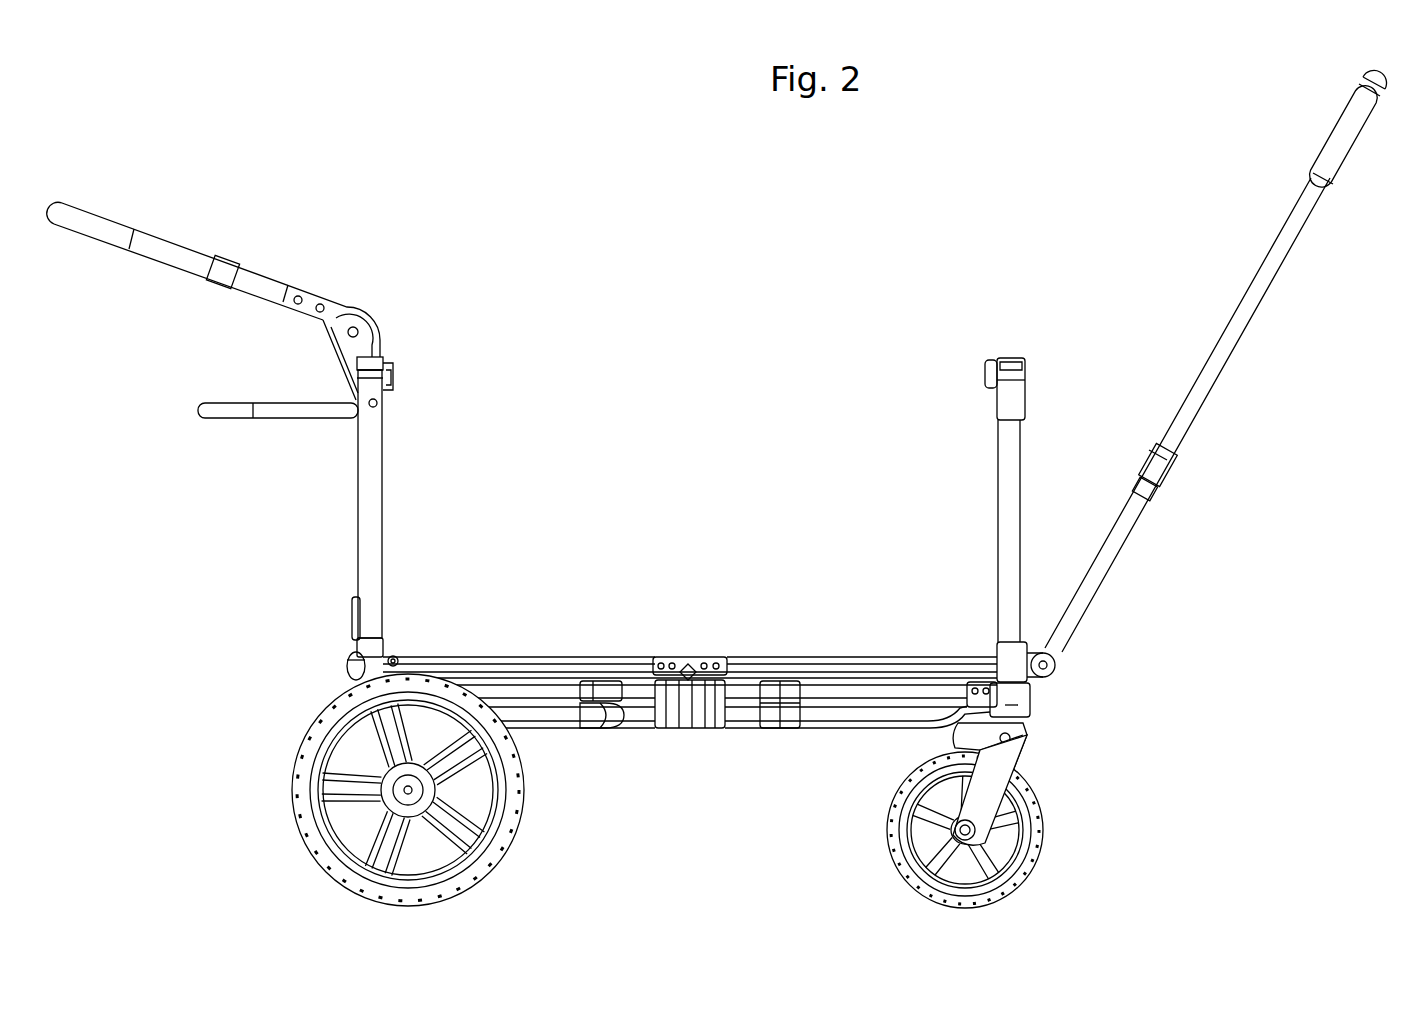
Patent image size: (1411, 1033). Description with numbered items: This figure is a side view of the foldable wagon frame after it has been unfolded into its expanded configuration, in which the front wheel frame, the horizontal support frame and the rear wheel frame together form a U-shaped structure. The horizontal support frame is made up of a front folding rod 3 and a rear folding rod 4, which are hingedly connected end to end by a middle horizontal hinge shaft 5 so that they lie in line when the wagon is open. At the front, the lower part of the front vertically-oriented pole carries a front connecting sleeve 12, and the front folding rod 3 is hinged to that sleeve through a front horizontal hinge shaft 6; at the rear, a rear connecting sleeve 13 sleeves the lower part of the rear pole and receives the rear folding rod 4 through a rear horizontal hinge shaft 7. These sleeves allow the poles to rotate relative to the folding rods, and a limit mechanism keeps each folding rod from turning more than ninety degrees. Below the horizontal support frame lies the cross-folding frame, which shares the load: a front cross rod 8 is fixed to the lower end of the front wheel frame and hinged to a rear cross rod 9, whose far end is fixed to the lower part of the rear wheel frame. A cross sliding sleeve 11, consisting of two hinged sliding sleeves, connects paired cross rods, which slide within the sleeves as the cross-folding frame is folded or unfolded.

The front folding rod 3 is at (815, 660).
The rear folding rod 4 is at (540, 658).
The middle horizontal hinge shaft 5 is at (690, 660).
The front horizontal hinge shaft 6 is at (995, 645).
The rear horizontal hinge shaft 7 is at (393, 658).
The front cross rod 8 is at (845, 718).
The rear cross rod 9 is at (553, 718).
The cross sliding sleeve 11 is at (782, 730).
The front connecting sleeve 12 is at (1055, 668).
The rear connecting sleeve 13 is at (350, 660).